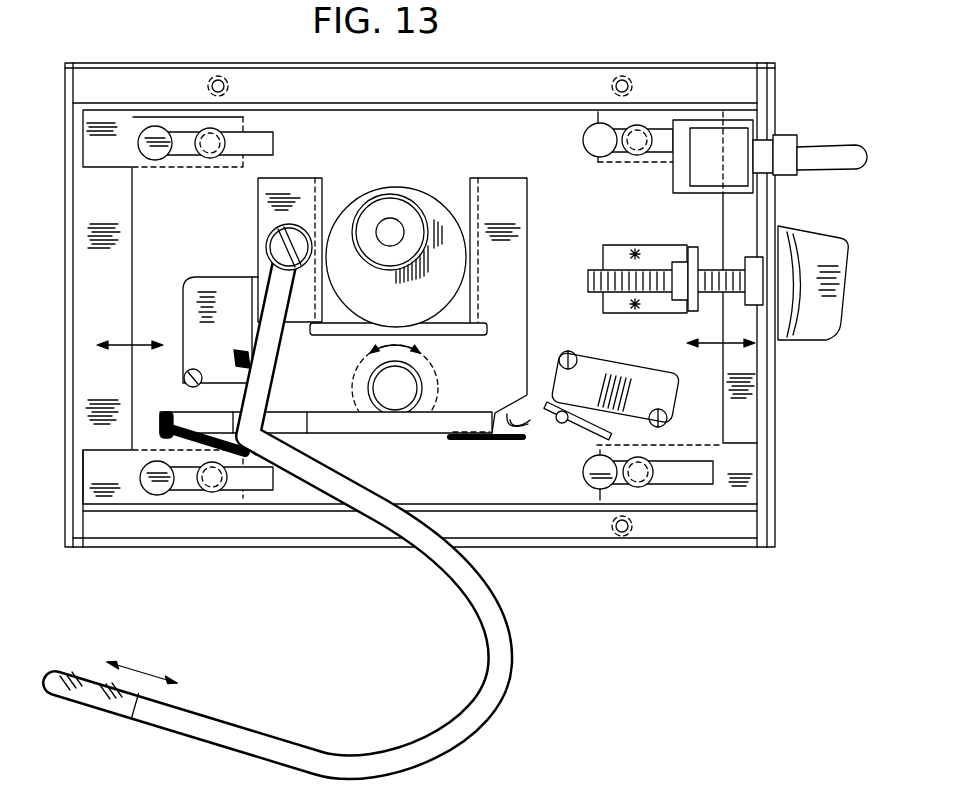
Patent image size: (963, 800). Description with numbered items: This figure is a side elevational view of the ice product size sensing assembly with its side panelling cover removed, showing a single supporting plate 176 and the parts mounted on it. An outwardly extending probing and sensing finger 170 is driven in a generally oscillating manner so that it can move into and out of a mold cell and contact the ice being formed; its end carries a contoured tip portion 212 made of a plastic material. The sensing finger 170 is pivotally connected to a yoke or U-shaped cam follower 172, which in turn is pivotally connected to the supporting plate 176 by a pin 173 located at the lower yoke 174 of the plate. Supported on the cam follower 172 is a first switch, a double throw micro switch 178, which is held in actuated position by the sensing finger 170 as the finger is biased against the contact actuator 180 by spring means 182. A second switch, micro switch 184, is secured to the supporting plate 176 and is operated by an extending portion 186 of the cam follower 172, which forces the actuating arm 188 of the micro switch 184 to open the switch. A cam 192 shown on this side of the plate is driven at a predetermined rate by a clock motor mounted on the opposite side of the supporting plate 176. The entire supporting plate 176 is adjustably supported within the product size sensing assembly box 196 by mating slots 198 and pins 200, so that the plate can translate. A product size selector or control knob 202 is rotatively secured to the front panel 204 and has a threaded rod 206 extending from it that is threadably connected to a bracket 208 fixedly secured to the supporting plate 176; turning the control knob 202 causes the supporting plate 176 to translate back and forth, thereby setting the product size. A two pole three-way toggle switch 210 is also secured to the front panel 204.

The probing and sensing finger 170 is at (488, 662).
The U-shaped cam follower 172 is at (507, 224).
The pin 173 is at (403, 385).
The yoke 174 is at (320, 389).
The supporting plate 176 is at (440, 153).
The double throw micro switch 178 is at (192, 312).
The contact actuator 180 is at (240, 362).
The spring means 182 is at (195, 425).
The micro switch 184 is at (640, 373).
The extending portion 186 is at (520, 437).
The actuating arm 188 is at (550, 408).
The cam 192 is at (418, 308).
The product size sensing assembly box 196 is at (656, 551).
The slots 198 is at (180, 152).
The pins 200 is at (211, 150).
The control knob 202 is at (820, 325).
The front panel 204 is at (778, 405).
The threaded rod 206 is at (594, 297).
The bracket 208 is at (676, 252).
The toggle switch 210 is at (838, 160).
The contoured tip portion 212 is at (73, 668).